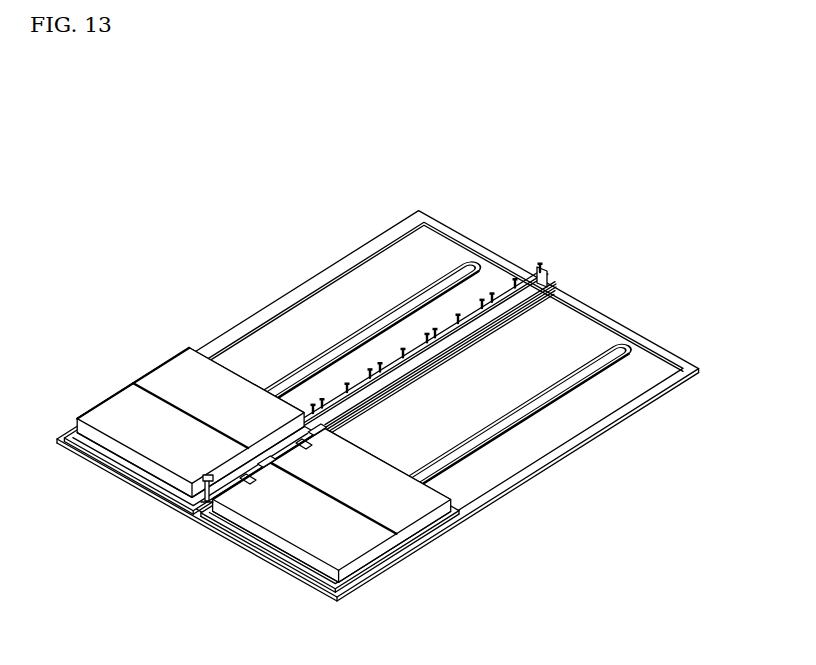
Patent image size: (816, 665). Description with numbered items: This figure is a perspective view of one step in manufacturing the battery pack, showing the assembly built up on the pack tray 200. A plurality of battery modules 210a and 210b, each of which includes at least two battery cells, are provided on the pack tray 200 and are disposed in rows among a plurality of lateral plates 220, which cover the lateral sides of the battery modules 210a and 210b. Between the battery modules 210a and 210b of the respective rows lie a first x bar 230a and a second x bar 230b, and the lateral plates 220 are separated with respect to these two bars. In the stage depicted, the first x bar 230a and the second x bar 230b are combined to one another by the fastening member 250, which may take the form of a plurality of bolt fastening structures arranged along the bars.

The pack tray 200 is at (518, 447).
The battery module 210a is at (117, 393).
The battery module 210b is at (381, 552).
The lateral plate 220 is at (114, 450).
The first x bar 230a is at (206, 512).
The second x bar 230b is at (357, 387).
The fastening member 250 is at (322, 402).